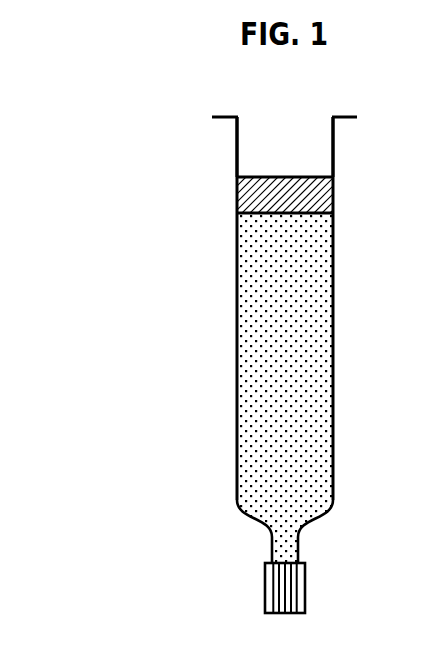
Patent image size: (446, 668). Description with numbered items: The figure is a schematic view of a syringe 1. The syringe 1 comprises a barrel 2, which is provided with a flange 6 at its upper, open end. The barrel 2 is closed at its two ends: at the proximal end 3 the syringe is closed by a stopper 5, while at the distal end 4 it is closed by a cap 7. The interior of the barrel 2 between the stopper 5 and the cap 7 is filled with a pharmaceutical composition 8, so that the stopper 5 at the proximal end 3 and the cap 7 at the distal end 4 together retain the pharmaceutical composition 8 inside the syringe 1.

The syringe 1 is at (106, 184).
The barrel 2 is at (230, 338).
The proximal end 3 is at (345, 145).
The distal end 4 is at (337, 539).
The stopper 5 is at (312, 197).
The flange 6 is at (225, 106).
The cap 7 is at (256, 588).
The pharmaceutical composition 8 is at (313, 362).